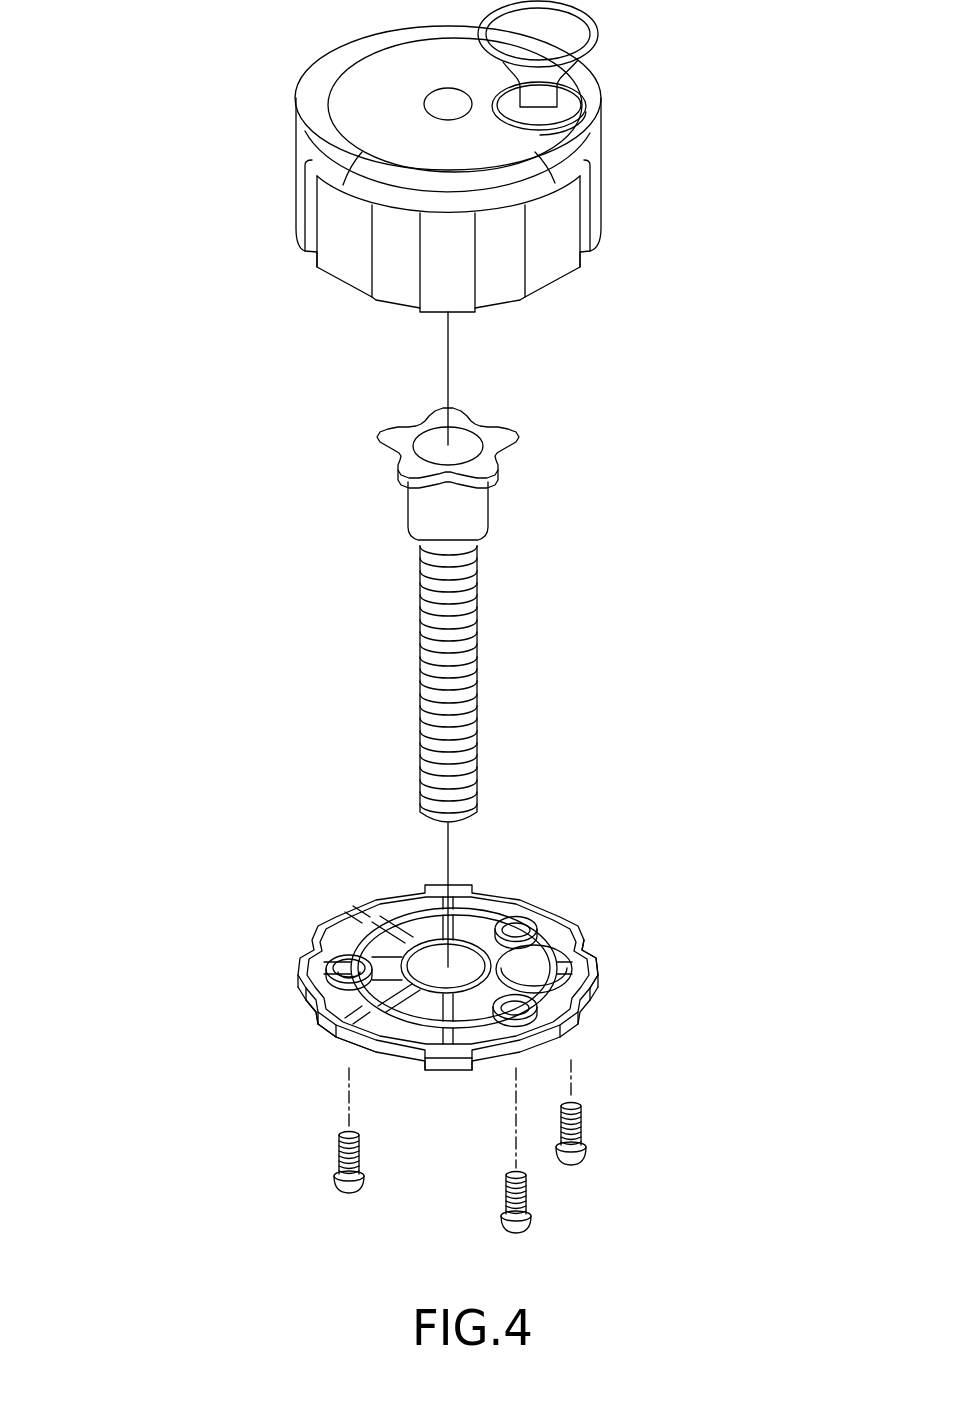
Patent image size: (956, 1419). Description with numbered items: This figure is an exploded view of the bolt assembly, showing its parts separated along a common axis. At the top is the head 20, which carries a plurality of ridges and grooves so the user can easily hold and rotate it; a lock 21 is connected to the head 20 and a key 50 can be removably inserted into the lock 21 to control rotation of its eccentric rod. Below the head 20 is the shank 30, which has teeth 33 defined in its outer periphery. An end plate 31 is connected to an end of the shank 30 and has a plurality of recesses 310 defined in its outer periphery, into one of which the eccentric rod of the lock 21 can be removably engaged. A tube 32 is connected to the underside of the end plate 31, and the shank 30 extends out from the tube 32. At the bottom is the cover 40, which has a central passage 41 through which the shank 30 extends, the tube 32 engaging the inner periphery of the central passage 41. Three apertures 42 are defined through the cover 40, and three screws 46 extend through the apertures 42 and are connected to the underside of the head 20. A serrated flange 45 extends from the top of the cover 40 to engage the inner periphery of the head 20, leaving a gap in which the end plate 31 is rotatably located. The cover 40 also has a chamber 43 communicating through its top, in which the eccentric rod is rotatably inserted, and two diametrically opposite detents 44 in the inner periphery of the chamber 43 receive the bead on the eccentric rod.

The head 20 is at (479, 184).
The lock 21 is at (563, 107).
The key 50 is at (570, 32).
The shank 30 is at (421, 589).
The end plate 31 is at (503, 422).
The recesses 310 is at (492, 427).
The tube 32 is at (418, 517).
The teeth 33 is at (413, 682).
The cover 40 is at (421, 970).
The central passage 41 is at (463, 957).
The apertures 42 is at (347, 956).
The chamber 43 is at (542, 960).
The detents 44 is at (587, 942).
The serrated flange 45 is at (345, 1026).
The screws 46 is at (580, 1130).